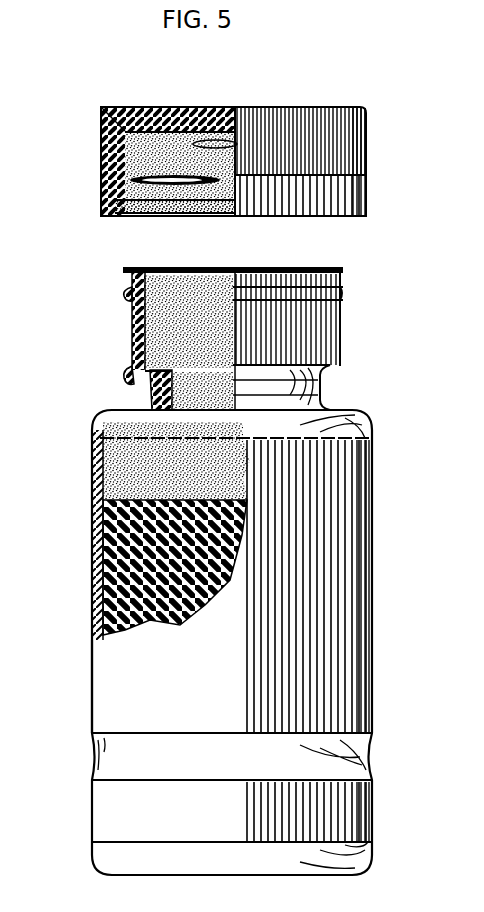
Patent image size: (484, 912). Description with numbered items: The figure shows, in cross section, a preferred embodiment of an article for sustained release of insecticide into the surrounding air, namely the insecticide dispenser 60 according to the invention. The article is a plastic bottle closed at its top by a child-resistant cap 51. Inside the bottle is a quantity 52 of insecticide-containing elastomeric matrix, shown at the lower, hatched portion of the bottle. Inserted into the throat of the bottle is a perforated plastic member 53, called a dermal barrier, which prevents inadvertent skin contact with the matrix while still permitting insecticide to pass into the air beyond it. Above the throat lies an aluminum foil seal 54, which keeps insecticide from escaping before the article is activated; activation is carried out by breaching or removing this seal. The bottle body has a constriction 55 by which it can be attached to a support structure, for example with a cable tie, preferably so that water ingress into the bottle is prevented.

The child-resistant cap 51 is at (355, 126).
The quantity of insecticide-containing elastomeric matrix 52 is at (97, 553).
The perforated plastic member 53 is at (128, 393).
The aluminum foil seal 54 is at (130, 268).
The constriction 55 is at (118, 712).
The insecticide dispenser 60 is at (418, 560).